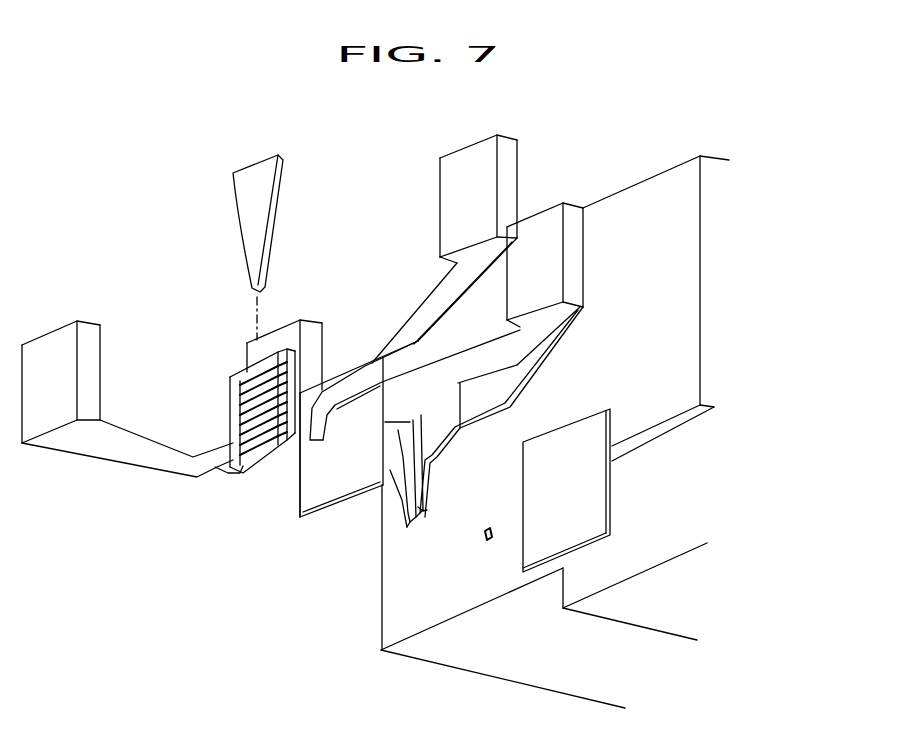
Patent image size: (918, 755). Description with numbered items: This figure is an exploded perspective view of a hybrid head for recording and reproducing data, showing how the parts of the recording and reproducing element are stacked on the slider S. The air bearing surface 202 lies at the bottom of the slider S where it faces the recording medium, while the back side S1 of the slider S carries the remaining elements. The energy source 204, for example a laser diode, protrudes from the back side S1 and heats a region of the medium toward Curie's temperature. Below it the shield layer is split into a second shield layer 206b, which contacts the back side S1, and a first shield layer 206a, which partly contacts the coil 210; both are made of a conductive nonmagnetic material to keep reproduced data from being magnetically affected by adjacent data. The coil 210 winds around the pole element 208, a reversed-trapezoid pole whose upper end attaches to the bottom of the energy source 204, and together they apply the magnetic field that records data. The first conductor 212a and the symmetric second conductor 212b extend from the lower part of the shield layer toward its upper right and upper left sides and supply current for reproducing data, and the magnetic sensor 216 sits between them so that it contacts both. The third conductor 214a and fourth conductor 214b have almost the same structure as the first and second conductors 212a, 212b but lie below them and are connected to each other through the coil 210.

The air bearing surface 202 is at (628, 563).
The energy source 204 is at (659, 182).
The first shield layer 206a is at (320, 490).
The second shield layer 206b is at (593, 505).
The pole element 208 is at (243, 203).
The coil 210 is at (272, 447).
The first conductor 212a is at (400, 433).
The second conductor 212b is at (523, 357).
The third conductor 214a is at (117, 452).
The fourth conductor 214b is at (427, 307).
The magnetic sensor 216 is at (483, 536).
The slider S is at (477, 663).
The back side of the slider S1 is at (388, 604).